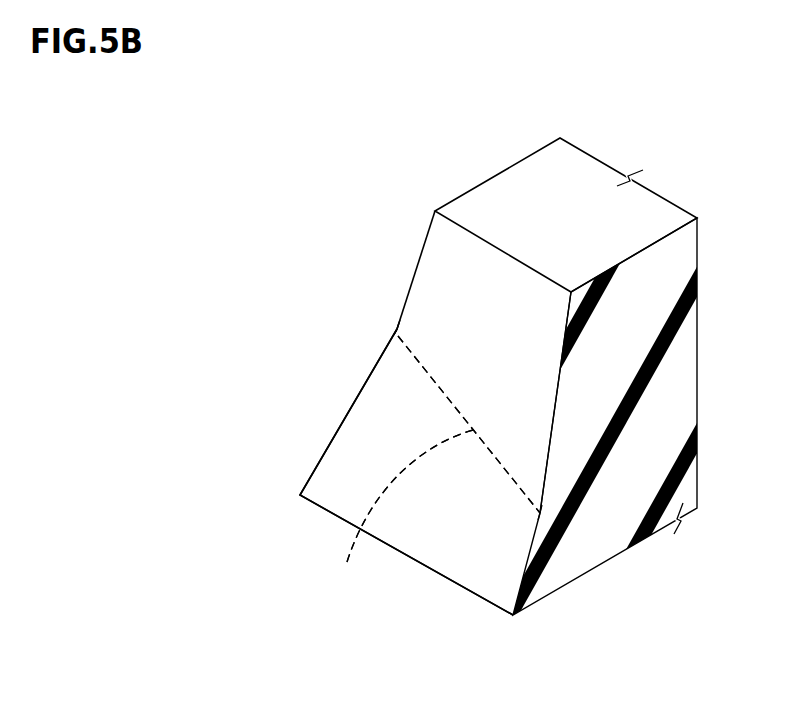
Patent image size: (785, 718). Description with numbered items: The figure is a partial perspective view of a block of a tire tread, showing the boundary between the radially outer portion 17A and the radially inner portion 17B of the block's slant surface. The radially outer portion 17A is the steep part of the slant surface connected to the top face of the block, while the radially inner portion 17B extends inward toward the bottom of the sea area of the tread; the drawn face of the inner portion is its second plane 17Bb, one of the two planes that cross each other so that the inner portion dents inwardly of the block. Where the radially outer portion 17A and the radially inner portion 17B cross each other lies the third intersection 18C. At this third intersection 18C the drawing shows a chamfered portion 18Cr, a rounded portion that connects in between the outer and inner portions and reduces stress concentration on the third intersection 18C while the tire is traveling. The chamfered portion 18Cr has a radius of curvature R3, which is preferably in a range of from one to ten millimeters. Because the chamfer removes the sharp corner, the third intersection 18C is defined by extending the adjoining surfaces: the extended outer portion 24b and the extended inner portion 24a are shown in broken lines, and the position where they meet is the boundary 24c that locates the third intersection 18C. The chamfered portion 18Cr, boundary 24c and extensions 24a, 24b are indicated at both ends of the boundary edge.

The radially outer portion 17A is at (455, 252).
The radially inner portion 17B is at (388, 431).
The second plane 17Bb is at (420, 472).
The third intersection 18C is at (381, 512).
The boundary 24c is at (410, 496).
The chamfered portion 18Cr is at (396, 328).
The radius of curvature R3 is at (373, 306).
The extended outer portion 24b is at (398, 329).
The extended inner portion 24a is at (392, 345).